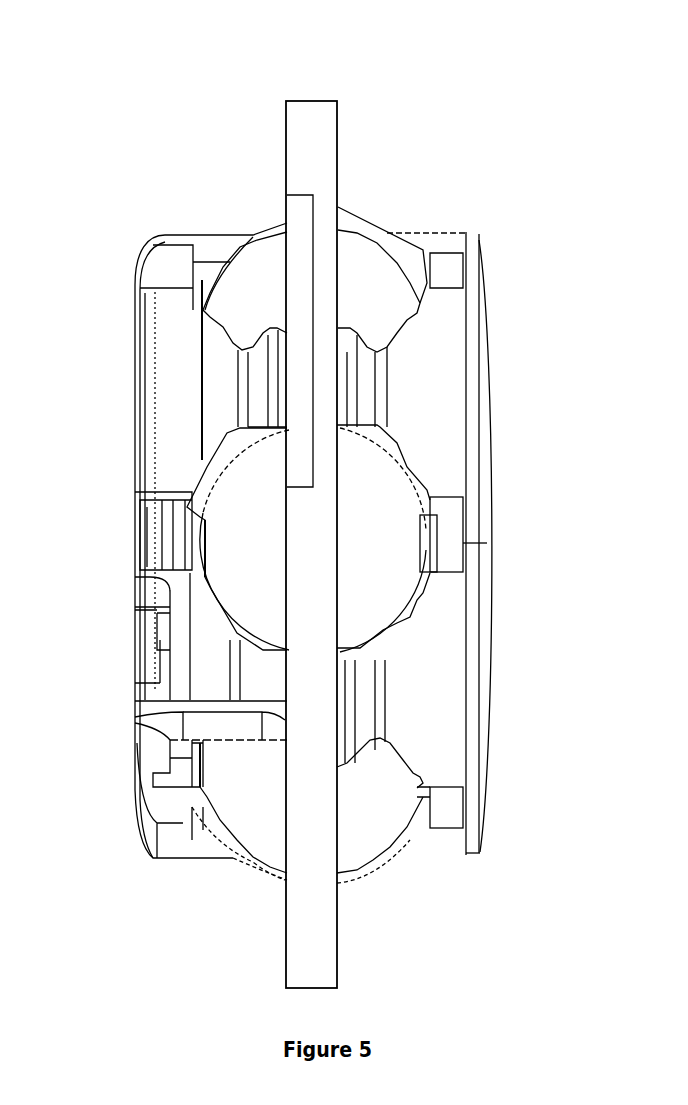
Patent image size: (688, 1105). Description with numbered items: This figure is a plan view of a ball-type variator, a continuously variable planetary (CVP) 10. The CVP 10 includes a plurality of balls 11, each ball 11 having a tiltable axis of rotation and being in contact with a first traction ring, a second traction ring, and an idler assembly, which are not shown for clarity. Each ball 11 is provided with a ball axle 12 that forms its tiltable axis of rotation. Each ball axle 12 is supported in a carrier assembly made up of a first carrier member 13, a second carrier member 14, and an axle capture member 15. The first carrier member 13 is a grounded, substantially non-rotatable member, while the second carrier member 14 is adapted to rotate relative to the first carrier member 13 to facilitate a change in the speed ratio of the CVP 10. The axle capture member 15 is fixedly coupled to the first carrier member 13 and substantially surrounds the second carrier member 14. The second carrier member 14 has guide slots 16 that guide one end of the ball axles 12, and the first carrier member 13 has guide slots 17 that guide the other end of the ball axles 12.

The continuously variable planetary 10 is at (200, 85).
The ball 11 is at (423, 826).
The ball axle 12 is at (463, 540).
The first carrier member 13 is at (338, 124).
The second carrier member 14 is at (230, 330).
The axle capture member 15 is at (240, 735).
The guide slot 16 is at (148, 565).
The guide slot 17 is at (441, 497).